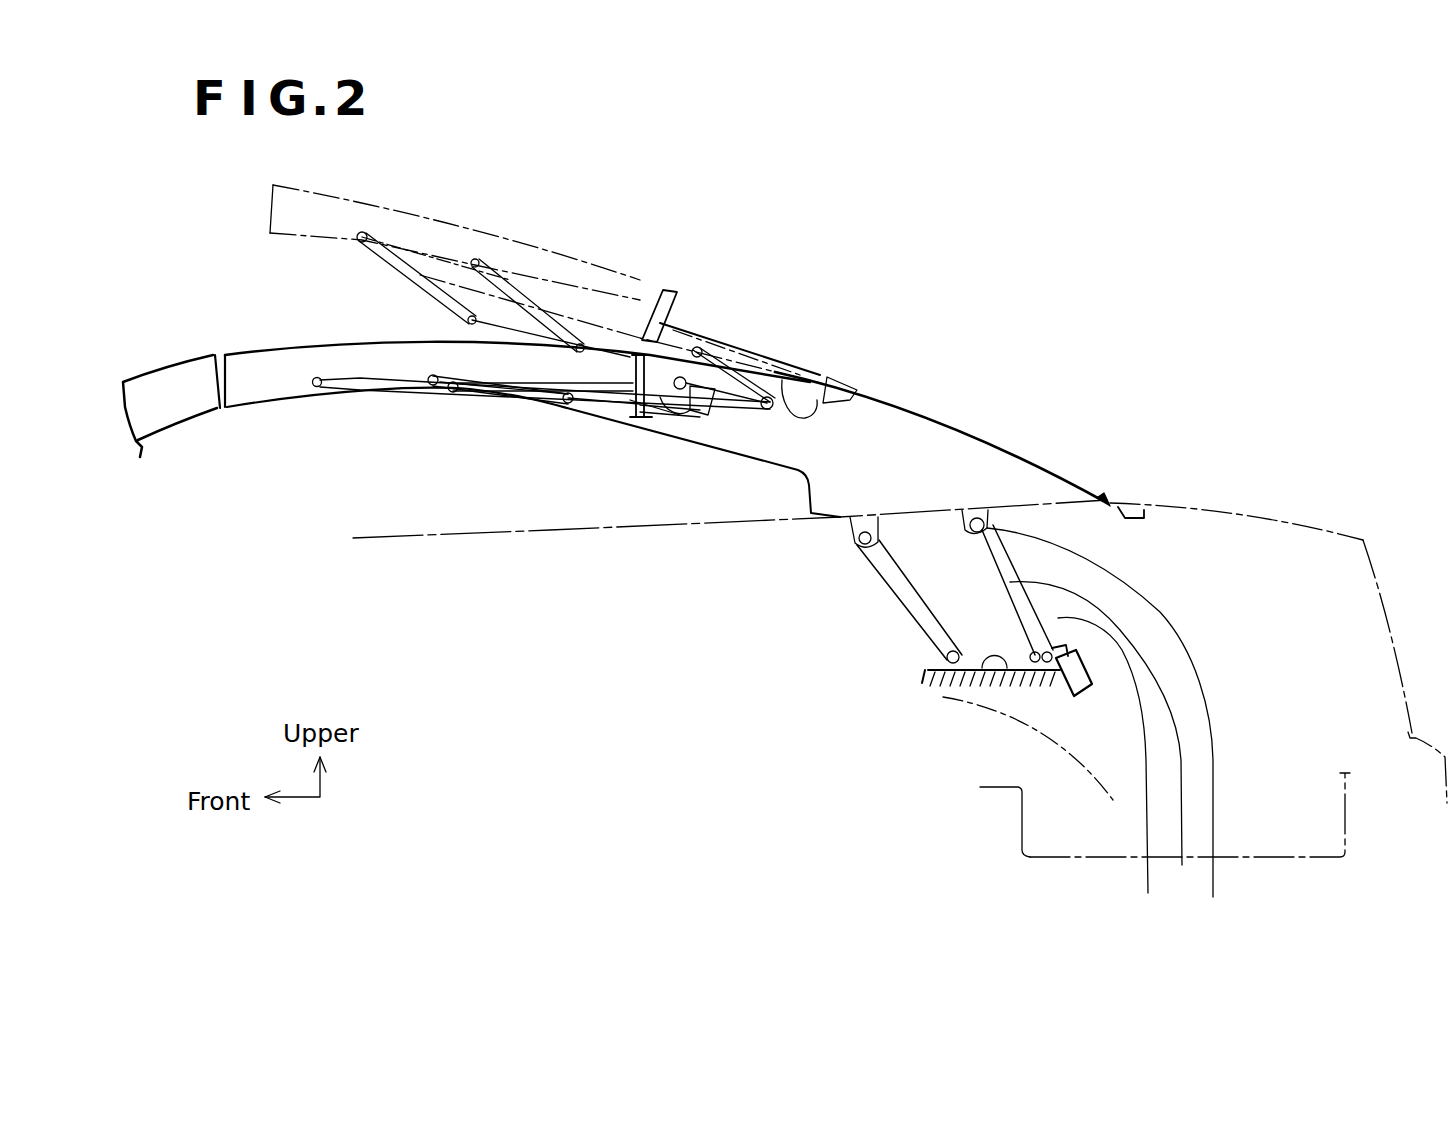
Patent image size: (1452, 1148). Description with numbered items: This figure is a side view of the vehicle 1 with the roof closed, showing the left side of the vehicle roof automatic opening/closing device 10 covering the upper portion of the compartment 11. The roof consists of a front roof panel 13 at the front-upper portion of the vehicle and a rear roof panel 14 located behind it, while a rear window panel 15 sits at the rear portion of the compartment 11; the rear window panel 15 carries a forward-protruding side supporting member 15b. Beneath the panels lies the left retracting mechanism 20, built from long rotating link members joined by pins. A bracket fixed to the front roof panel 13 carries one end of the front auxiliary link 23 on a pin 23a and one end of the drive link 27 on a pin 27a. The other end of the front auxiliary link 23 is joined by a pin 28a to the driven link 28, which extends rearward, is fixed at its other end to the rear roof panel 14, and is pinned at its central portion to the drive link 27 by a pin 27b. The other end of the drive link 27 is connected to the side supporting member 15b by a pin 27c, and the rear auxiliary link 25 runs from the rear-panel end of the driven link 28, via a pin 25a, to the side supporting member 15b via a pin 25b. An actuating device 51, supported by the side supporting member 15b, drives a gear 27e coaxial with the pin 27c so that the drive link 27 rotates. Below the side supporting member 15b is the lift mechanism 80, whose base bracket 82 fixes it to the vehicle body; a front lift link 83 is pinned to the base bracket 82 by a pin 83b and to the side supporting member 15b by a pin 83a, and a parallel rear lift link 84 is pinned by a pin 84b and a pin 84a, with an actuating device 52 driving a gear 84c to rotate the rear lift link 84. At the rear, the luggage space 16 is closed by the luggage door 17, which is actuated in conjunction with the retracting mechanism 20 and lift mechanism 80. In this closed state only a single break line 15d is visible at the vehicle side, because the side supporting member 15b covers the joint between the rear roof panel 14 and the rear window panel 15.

The vehicle 1 is at (507, 652).
The vehicle roof automatic opening/closing device 10 is at (1047, 402).
The compartment 11 is at (322, 473).
The front roof panel 13 is at (272, 350).
The rear roof panel 14 is at (805, 372).
The rear window panel 15 is at (939, 421).
The side supporting member 15b is at (823, 405).
The break line 15d is at (652, 325).
The luggage space 16 is at (1228, 605).
The luggage door 17 is at (1177, 505).
The retracting mechanism 20 is at (493, 420).
The front auxiliary link 23 is at (352, 390).
The pin 23a is at (315, 386).
The rear auxiliary link 25 is at (740, 410).
The pin 25a is at (679, 378).
The pin 25b is at (768, 410).
The drive link 27 is at (608, 400).
The pin 27a is at (447, 395).
The pin 27b is at (568, 400).
The pin 27c is at (668, 410).
The gear 27e is at (700, 410).
The driven link 28 is at (643, 400).
The pin 28a is at (440, 390).
The actuating device 51 is at (720, 410).
The actuating device 52 is at (1073, 697).
The lift mechanism 80 is at (1060, 723).
The base bracket 82 is at (997, 687).
The front lift link 83 is at (890, 583).
The pin 83a is at (862, 545).
The pin 83b is at (908, 668).
The rear lift link 84 is at (1103, 741).
The pin 84a is at (1116, 727).
The pin 84b is at (1047, 673).
The gear 84c is at (1112, 776).